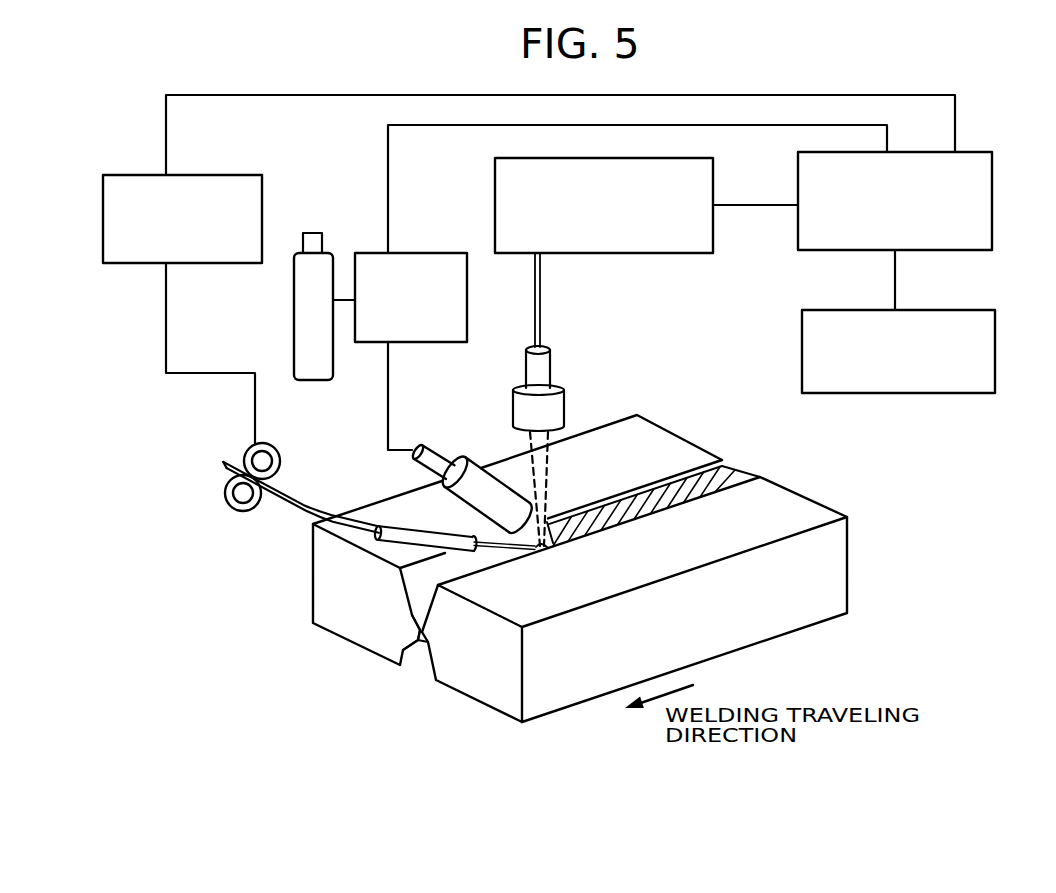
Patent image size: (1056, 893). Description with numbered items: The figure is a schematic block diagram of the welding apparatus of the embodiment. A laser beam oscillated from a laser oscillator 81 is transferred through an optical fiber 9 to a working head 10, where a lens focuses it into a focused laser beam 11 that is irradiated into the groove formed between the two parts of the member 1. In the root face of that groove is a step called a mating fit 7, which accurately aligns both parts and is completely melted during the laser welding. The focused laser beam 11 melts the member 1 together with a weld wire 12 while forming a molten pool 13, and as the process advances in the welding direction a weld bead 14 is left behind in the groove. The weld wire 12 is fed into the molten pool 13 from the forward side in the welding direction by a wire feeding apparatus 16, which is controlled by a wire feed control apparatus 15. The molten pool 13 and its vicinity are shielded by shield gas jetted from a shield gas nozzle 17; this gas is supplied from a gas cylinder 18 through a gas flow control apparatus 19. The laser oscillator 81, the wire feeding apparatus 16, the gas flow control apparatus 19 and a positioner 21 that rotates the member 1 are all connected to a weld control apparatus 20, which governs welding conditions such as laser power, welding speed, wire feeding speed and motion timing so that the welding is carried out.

The member 1 is at (682, 443).
The mating fit 7 is at (410, 623).
The optical fiber 9 is at (541, 300).
The working head 10 is at (567, 400).
The focused laser beam 11 is at (547, 497).
The weld wire 12 is at (493, 543).
The molten pool 13 is at (563, 537).
The weld bead 14 is at (697, 495).
The wire feed control apparatus 15 is at (200, 177).
The wire feeding apparatus 16 is at (236, 517).
The shield gas nozzle 17 is at (473, 463).
The gas cylinder 18 is at (303, 322).
The gas flow control apparatus 19 is at (395, 255).
The weld control apparatus 20 is at (972, 195).
The positioner 21 is at (978, 357).
The laser oscillator 81 is at (628, 237).